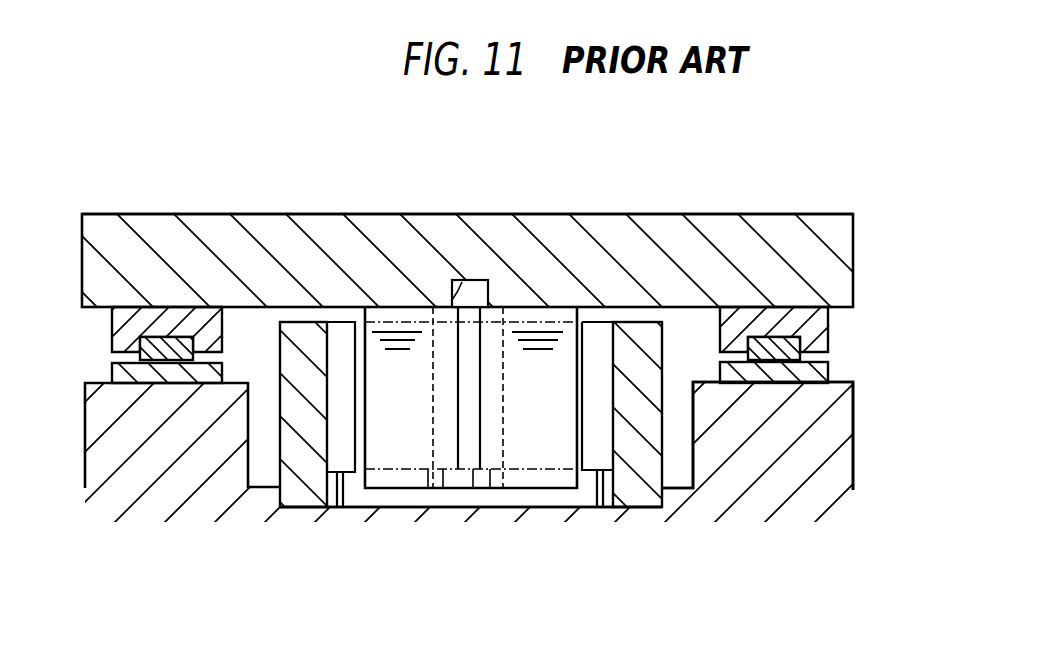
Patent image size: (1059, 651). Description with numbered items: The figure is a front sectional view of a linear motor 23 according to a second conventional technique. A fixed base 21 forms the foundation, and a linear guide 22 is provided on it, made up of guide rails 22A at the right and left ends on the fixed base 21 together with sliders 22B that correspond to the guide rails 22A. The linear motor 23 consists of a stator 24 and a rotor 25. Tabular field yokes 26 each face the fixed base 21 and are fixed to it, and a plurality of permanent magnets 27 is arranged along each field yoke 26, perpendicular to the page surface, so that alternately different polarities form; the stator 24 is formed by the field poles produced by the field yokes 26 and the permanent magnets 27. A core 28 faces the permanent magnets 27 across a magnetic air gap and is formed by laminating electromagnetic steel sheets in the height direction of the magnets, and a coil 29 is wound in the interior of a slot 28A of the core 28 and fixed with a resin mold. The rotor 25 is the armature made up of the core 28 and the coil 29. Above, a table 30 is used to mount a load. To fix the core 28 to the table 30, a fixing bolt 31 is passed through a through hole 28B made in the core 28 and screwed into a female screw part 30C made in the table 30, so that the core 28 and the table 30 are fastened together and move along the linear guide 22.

The fixed base 21 is at (118, 477).
The linear guide 22 is at (458, 256).
The guide rail 22A is at (775, 345).
The slider 22B is at (750, 320).
The linear motor 23 is at (298, 190).
The stator 24 is at (680, 473).
The rotor 25 is at (398, 497).
The tabular field yoke 26 is at (302, 490).
The permanent magnet 27 is at (352, 467).
The core 28 is at (562, 412).
The slot 28A is at (433, 488).
The through hole 28B is at (465, 488).
The coil 29 is at (548, 480).
The table 30 is at (680, 232).
The female screw part 30C is at (460, 280).
The fixing bolt 31 is at (475, 478).